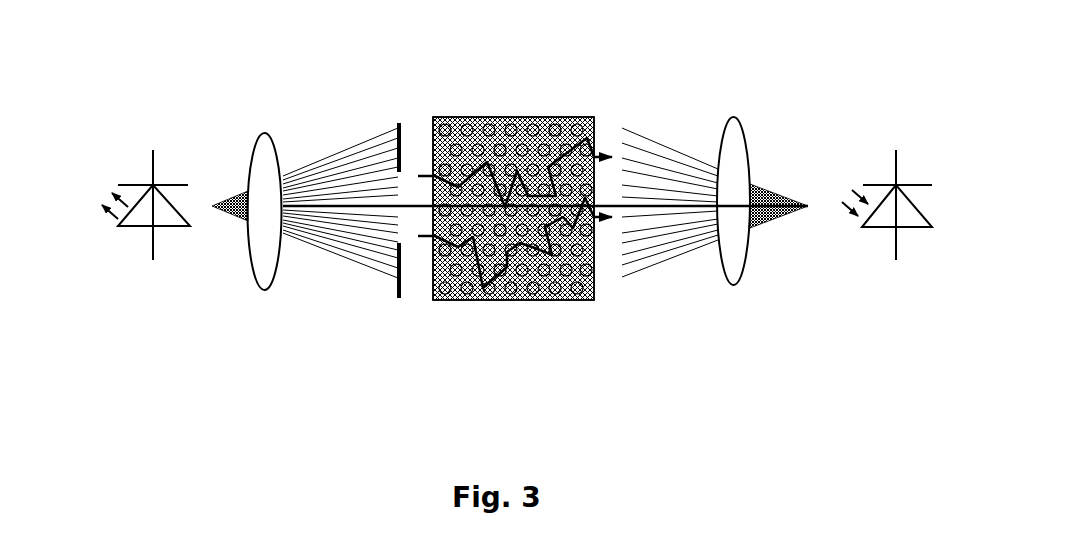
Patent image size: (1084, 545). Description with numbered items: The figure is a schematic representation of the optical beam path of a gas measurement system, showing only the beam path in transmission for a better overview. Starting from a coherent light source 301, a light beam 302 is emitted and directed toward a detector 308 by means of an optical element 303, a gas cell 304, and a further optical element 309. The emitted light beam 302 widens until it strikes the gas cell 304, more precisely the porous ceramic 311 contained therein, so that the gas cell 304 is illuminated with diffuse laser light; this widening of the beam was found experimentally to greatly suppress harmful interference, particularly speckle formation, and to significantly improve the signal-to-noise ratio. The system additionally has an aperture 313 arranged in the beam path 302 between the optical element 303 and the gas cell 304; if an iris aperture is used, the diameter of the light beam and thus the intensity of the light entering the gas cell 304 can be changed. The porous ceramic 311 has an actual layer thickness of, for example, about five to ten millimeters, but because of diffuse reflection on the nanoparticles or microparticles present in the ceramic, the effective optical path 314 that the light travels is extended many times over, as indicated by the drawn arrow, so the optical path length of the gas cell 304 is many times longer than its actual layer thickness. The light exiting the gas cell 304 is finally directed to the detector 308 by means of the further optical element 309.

The coherent light source 301 is at (135, 243).
The light beam 302 is at (337, 255).
The optical element 303 is at (258, 128).
The gas cell 304 is at (508, 117).
The detector 308 is at (918, 258).
The further optical element 309 is at (742, 128).
The porous ceramic 311 is at (517, 296).
The aperture 313 is at (402, 122).
The effective optical path 314 is at (552, 255).